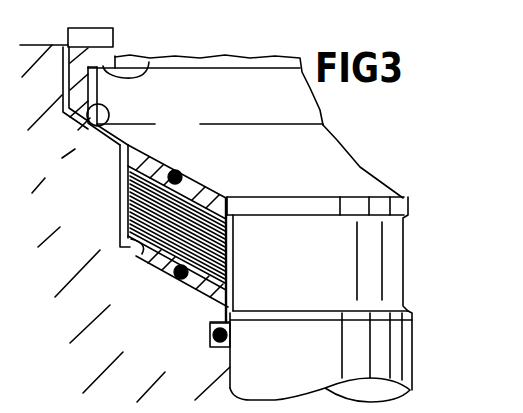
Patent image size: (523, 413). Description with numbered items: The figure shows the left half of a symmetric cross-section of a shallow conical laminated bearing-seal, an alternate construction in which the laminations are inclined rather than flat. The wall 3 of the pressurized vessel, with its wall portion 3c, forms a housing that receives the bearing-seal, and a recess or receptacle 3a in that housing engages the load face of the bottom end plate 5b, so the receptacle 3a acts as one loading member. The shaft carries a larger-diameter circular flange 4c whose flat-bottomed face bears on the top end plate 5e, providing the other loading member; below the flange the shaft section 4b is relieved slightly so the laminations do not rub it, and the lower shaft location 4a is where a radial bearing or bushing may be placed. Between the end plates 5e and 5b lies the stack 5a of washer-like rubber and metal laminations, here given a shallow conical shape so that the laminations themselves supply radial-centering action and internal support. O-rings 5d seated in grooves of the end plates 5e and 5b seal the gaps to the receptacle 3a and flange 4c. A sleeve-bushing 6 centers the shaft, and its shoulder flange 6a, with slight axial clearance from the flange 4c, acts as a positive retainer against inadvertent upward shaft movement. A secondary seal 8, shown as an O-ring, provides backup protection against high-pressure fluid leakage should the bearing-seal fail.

The wall 3 is at (86, 317).
The receptacle 3a is at (130, 240).
The wall portion 3c is at (106, 146).
The shaft location 4a is at (318, 388).
The relieved shaft section 4b is at (306, 278).
The circular flange 4c is at (272, 110).
The stack of laminations 5a is at (120, 168).
The bottom end plate 5b is at (195, 285).
The O-ring 5d is at (183, 175).
The top end plate 5e is at (138, 156).
The sleeve-bushing 6 is at (98, 134).
The shoulder flange 6a is at (149, 62).
The secondary seal 8 is at (228, 336).